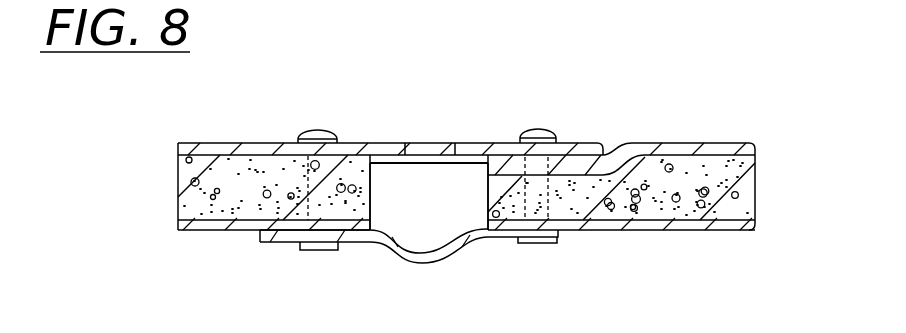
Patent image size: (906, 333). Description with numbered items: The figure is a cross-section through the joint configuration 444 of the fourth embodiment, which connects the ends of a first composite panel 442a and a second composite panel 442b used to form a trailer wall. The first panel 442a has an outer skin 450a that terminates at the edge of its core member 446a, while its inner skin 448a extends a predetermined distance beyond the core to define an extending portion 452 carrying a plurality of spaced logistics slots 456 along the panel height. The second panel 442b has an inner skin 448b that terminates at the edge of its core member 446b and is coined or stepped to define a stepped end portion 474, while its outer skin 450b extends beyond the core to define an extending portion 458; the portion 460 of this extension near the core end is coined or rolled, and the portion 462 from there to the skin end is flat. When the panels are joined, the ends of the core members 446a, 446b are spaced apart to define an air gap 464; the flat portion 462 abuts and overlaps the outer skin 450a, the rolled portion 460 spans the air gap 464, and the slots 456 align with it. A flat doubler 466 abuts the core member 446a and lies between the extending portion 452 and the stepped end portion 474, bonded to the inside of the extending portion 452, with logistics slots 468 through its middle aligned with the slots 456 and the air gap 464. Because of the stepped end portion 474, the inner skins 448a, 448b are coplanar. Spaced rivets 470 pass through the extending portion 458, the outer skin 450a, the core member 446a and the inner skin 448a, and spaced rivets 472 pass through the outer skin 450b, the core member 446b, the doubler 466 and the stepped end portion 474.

The first composite panel 442a is at (200, 199).
The second composite panel 442b is at (742, 209).
The joint configuration 444 is at (408, 272).
The core member 446a is at (188, 168).
The core member 446b is at (733, 170).
The inner skin 448a is at (212, 150).
The inner skin 448b is at (717, 148).
The outer skin 450a is at (223, 231).
The outer skin 450b is at (680, 231).
The extending portion 452 is at (377, 148).
The logistics slots 456 is at (452, 153).
The extending portion 458 is at (390, 250).
The coined or rolled portion 460 is at (437, 261).
The flat portion 462 is at (293, 246).
The air gap 464 is at (470, 228).
The doubler 466 is at (489, 160).
The logistics slots 468 is at (409, 164).
The rivets 470 is at (315, 131).
The rivets 472 is at (540, 128).
The coined or stepped end portion 474 is at (578, 168).